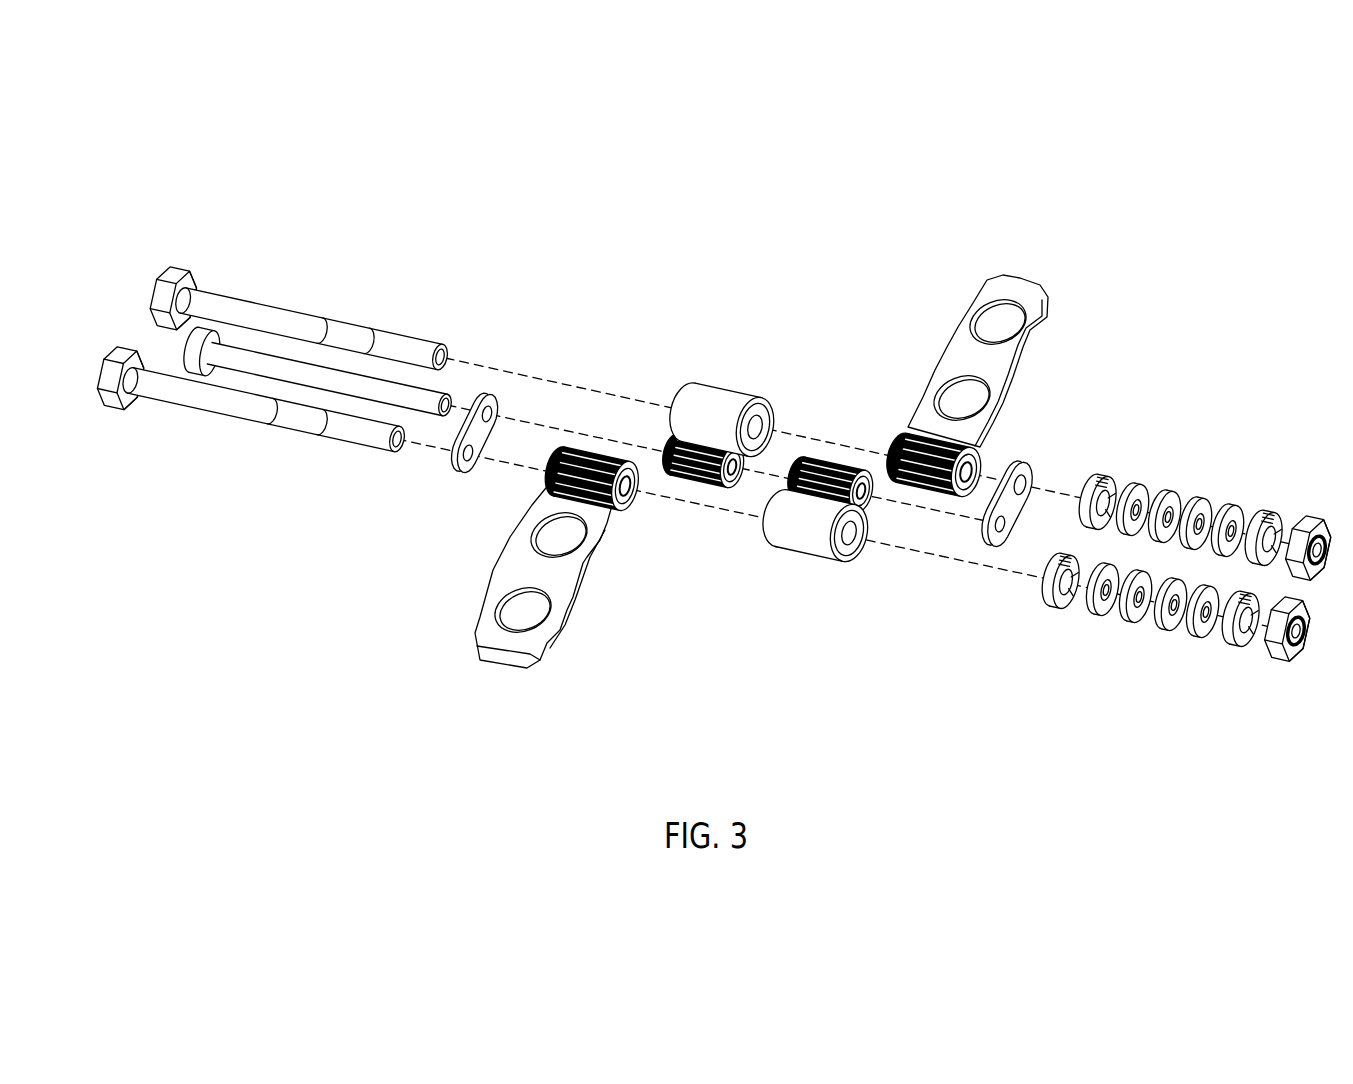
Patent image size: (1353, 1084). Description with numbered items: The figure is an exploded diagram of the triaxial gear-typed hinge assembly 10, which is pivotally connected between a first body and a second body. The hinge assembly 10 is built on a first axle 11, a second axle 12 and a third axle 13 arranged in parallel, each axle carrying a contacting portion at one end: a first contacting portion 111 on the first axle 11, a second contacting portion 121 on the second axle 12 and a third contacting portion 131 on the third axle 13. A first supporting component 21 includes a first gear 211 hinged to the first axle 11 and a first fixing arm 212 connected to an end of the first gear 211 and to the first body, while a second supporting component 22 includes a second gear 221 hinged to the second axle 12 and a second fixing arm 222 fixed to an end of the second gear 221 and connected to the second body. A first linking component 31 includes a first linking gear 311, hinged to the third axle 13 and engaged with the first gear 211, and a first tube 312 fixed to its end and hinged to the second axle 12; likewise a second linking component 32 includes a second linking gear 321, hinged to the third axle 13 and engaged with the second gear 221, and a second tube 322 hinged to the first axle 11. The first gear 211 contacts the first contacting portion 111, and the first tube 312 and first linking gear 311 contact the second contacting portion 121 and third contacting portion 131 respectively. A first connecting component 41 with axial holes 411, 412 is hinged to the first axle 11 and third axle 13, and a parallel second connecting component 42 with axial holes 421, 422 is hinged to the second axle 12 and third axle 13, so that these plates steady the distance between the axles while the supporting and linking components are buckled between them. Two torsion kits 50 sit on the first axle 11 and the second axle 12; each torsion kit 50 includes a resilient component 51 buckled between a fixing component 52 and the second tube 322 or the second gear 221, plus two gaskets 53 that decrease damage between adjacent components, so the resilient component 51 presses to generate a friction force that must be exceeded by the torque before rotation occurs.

The triaxial gear-typed hinge assembly 10 is at (400, 660).
The first axle 11 is at (112, 412).
The first contacting portion 111 is at (138, 405).
The second axle 12 is at (176, 270).
The second contacting portion 121 is at (200, 283).
The third axle 13 is at (185, 345).
The third contacting portion 131 is at (198, 372).
The first supporting component 21 is at (678, 607).
The first gear 211 is at (630, 503).
The first fixing arm 212 is at (517, 643).
The second supporting component 22 is at (843, 268).
The second gear 221 is at (898, 430).
The second fixing arm 222 is at (998, 302).
The first linking component 31 is at (697, 247).
The first linking gear 311 is at (668, 448).
The first tube 312 is at (680, 392).
The second linking component 32 is at (917, 632).
The second linking gear 321 is at (880, 500).
The second tube 322 is at (862, 566).
The first connecting component 41 is at (455, 478).
The axial hole 411 is at (468, 462).
The axial hole 412 is at (500, 440).
The second connecting component 42 is at (1024, 458).
The axial hole 421 is at (1024, 486).
The axial hole 422 is at (1004, 525).
The torsion kit 50 is at (1213, 465).
The resilient component 51 is at (1205, 638).
The fixing component 52 is at (1285, 660).
The gasket 53 is at (1052, 602).